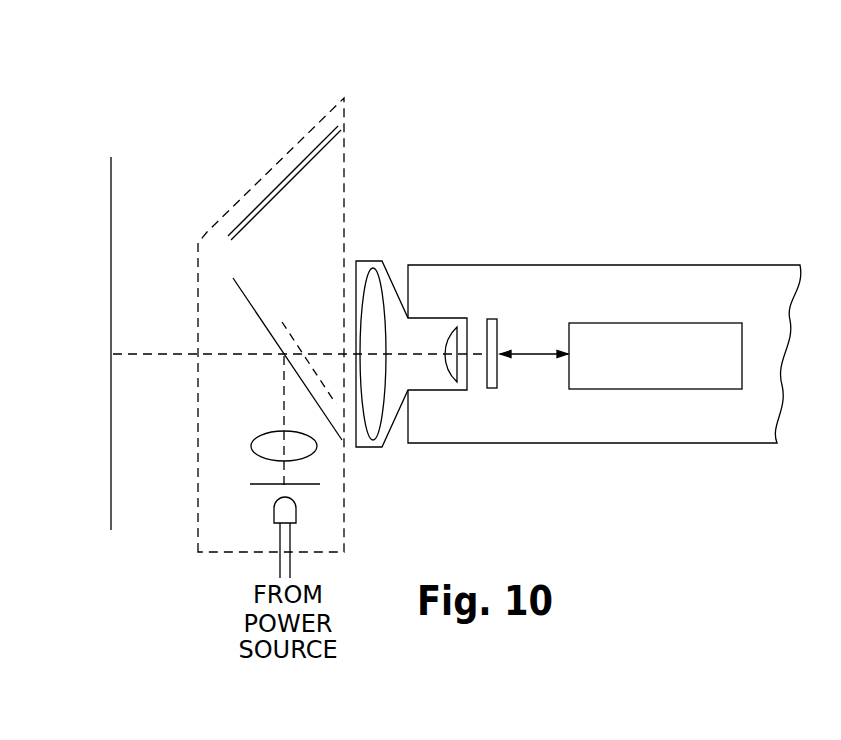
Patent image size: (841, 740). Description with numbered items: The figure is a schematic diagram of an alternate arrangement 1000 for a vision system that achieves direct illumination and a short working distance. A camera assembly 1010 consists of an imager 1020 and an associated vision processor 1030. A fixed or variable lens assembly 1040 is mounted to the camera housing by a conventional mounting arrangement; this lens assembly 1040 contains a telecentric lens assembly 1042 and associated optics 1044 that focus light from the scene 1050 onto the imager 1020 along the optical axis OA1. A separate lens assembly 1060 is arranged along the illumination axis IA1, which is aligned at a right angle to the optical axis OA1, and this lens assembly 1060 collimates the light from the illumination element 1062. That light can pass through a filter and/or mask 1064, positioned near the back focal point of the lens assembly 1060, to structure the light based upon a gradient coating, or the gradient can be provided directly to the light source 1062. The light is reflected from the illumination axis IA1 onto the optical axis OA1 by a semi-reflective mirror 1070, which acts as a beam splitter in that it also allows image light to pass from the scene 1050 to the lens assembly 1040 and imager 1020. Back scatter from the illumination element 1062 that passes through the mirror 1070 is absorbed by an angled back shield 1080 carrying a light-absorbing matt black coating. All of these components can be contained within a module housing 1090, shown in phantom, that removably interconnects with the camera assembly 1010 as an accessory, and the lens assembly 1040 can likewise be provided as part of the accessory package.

The alternate arrangement 1000 is at (549, 228).
The camera assembly 1010 is at (582, 265).
The imager 1020 is at (499, 338).
The vision processor 1030 is at (697, 323).
The lens assembly 1040 is at (418, 311).
The telecentric lens assembly 1042 is at (386, 263).
The optics 1044 is at (457, 328).
The scene 1050 is at (114, 184).
The lens assembly 1060 is at (305, 450).
The illumination element 1062 is at (298, 517).
The filter and/or mask 1064 is at (263, 487).
The semi-reflective mirror 1070 is at (262, 321).
The angled back shield 1080 is at (300, 171).
The module housing 1090 is at (300, 141).
The optical axis OA1 is at (160, 352).
The illumination axis IA1 is at (287, 408).